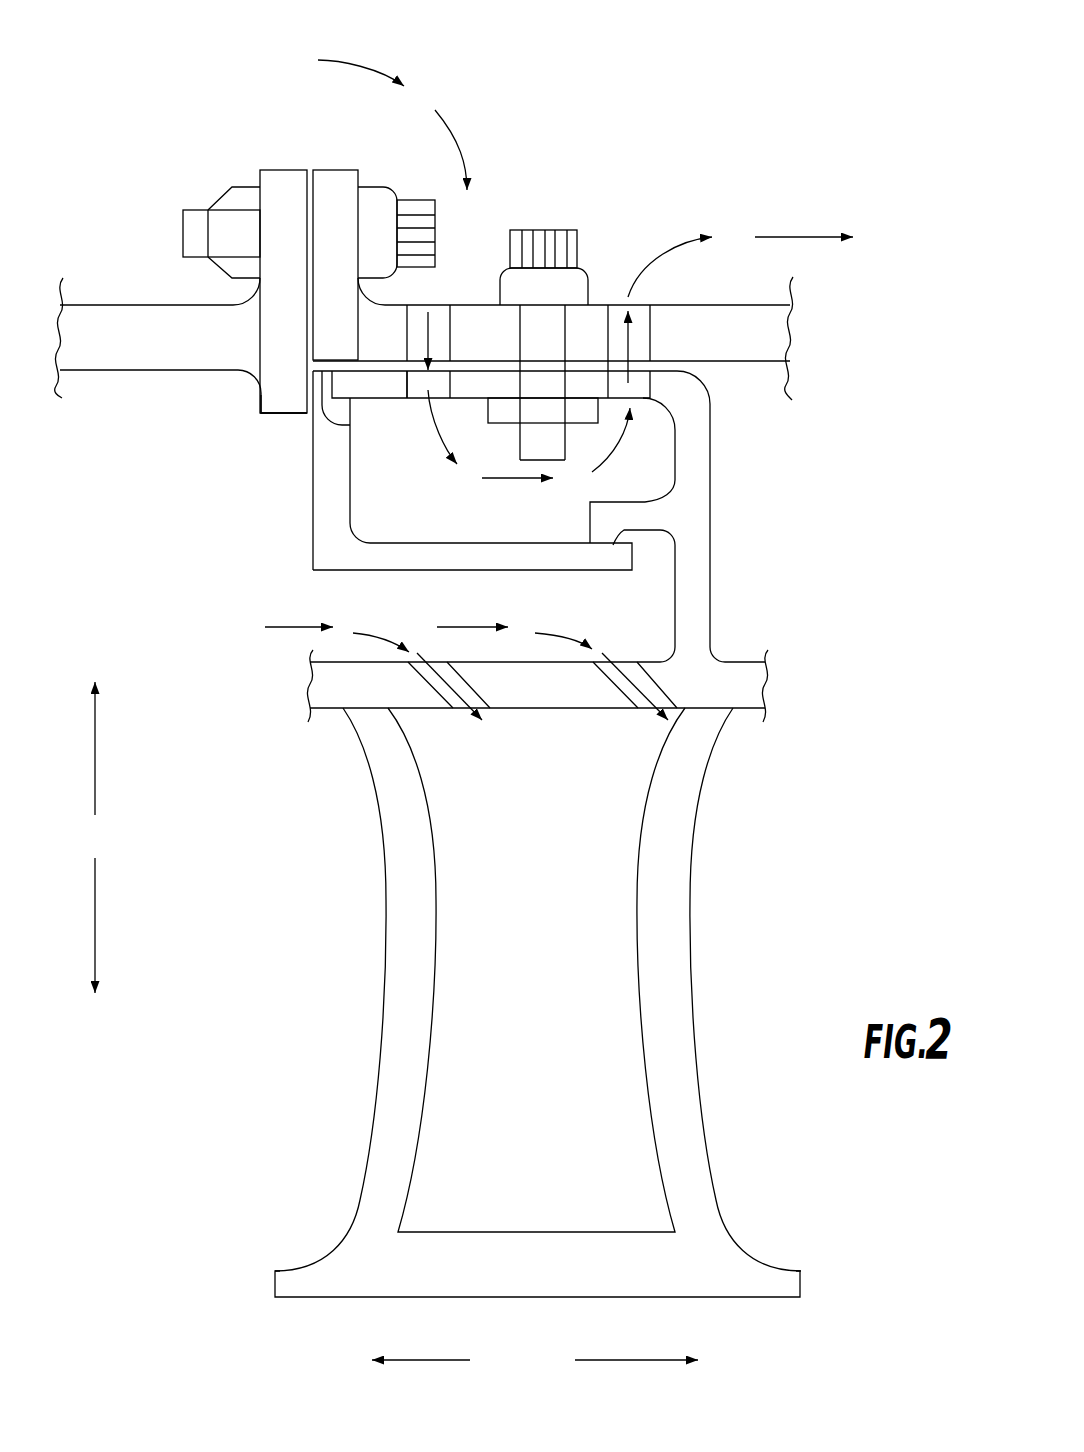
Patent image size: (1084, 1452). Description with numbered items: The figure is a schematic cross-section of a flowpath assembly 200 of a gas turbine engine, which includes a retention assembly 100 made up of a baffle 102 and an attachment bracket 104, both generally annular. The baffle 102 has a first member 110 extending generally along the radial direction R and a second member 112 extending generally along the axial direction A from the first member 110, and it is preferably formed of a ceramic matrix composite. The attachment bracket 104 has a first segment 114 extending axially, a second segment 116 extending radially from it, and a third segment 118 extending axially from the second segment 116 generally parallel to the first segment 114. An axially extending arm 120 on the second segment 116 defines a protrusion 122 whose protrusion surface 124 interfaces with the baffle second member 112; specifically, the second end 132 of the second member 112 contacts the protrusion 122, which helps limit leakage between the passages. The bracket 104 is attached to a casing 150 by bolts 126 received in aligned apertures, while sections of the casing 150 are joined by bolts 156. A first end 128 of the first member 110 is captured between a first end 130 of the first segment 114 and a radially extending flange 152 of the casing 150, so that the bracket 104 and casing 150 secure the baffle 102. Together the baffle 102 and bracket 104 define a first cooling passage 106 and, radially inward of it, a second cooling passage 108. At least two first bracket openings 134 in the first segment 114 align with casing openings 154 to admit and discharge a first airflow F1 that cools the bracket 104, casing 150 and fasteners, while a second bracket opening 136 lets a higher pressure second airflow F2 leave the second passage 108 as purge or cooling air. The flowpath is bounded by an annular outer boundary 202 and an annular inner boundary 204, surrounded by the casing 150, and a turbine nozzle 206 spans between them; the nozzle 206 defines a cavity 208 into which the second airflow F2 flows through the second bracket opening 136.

The retention assembly 100 is at (165, 492).
The baffle 102 is at (298, 547).
The attachment bracket 104 is at (736, 577).
The first cooling passage 106 is at (388, 437).
The second cooling passage 108 is at (347, 652).
The first member 110 is at (323, 467).
The second member 112 is at (432, 548).
The first segment 114 is at (484, 390).
The second segment 116 is at (688, 462).
The third segment 118 is at (540, 708).
The axially extending arm 120 is at (675, 488).
The protrusion 122 is at (603, 527).
The protrusion surface 124 is at (596, 550).
The bolt 126 is at (540, 235).
The first end 128 is at (303, 378).
The first end 130 is at (382, 355).
The second end 132 is at (631, 574).
The first bracket openings 134 is at (440, 393).
The second bracket opening 136 is at (636, 670).
The casing 150 is at (168, 313).
The radially extending flange 152 is at (277, 390).
The casing openings 154 is at (415, 304).
The bolt 156 is at (235, 240).
The flowpath assembly 200 is at (214, 91).
The annular outer boundary 202 is at (784, 709).
The annular inner boundary 204 is at (822, 1283).
The turbine nozzle 206 is at (677, 966).
The cavity 208 is at (603, 891).
The first airflow F1 is at (355, 60).
The second airflow F2 is at (265, 627).
The radial direction R is at (95, 837).
The axial direction A is at (535, 1361).